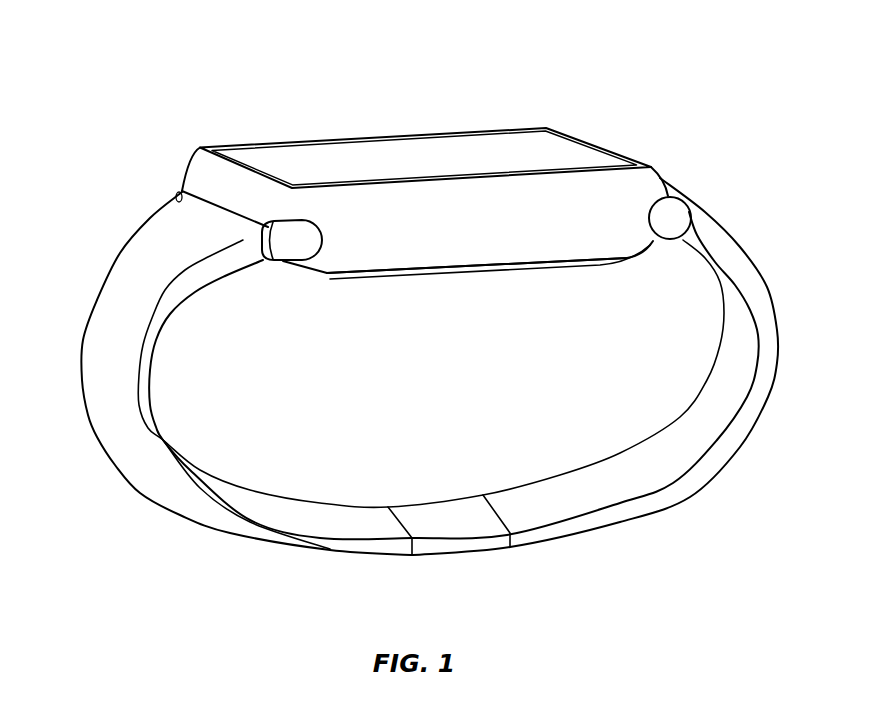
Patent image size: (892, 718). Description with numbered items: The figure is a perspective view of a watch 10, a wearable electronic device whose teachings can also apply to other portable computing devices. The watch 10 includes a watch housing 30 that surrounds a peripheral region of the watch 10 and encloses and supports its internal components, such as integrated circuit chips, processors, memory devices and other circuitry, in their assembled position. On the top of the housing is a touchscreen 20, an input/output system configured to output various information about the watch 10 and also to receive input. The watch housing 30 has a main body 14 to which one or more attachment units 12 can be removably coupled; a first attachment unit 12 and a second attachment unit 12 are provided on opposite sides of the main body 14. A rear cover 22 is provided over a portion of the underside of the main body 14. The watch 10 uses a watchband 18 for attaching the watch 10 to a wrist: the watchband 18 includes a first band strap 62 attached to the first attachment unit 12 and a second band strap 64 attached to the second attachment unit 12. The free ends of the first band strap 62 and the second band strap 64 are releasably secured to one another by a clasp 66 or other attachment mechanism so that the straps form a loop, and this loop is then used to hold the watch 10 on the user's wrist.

The watch 10 is at (175, 110).
The attachment unit 12 is at (280, 258).
The main body 14 is at (190, 183).
The watchband 18 is at (117, 258).
The touchscreen 20 is at (457, 152).
The rear cover 22 is at (337, 280).
The watch housing 30 is at (543, 128).
The first band strap 62 is at (120, 437).
The second band strap 64 is at (693, 442).
The clasp 66 is at (458, 545).